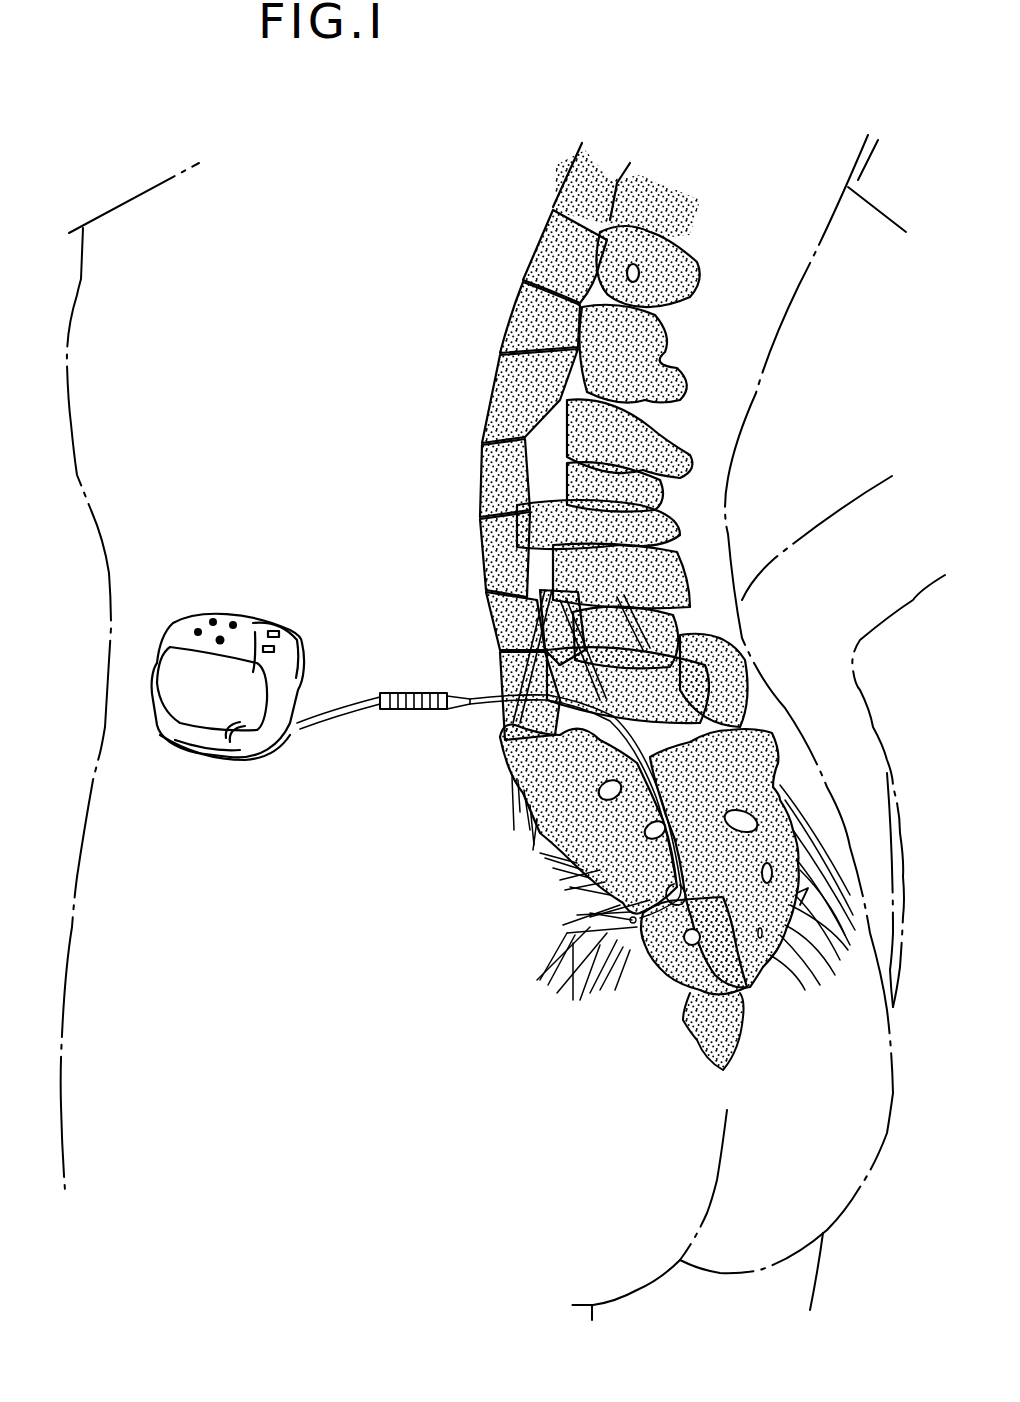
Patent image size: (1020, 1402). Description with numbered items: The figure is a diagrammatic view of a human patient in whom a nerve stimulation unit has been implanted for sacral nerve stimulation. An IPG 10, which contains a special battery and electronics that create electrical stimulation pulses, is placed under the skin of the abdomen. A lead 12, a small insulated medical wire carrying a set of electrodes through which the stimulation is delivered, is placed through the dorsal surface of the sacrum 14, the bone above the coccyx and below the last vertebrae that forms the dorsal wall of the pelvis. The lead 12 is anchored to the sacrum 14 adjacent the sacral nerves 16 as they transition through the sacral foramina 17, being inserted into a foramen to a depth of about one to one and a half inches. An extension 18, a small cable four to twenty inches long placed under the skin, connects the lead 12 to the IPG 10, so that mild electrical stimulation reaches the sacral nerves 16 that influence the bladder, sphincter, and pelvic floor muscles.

The IPG 10 is at (198, 717).
The lead 12 is at (650, 967).
The sacrum 14 is at (770, 827).
The sacral nerves 16 is at (553, 893).
The sacral foramina 17 is at (740, 965).
The extension 18 is at (332, 702).